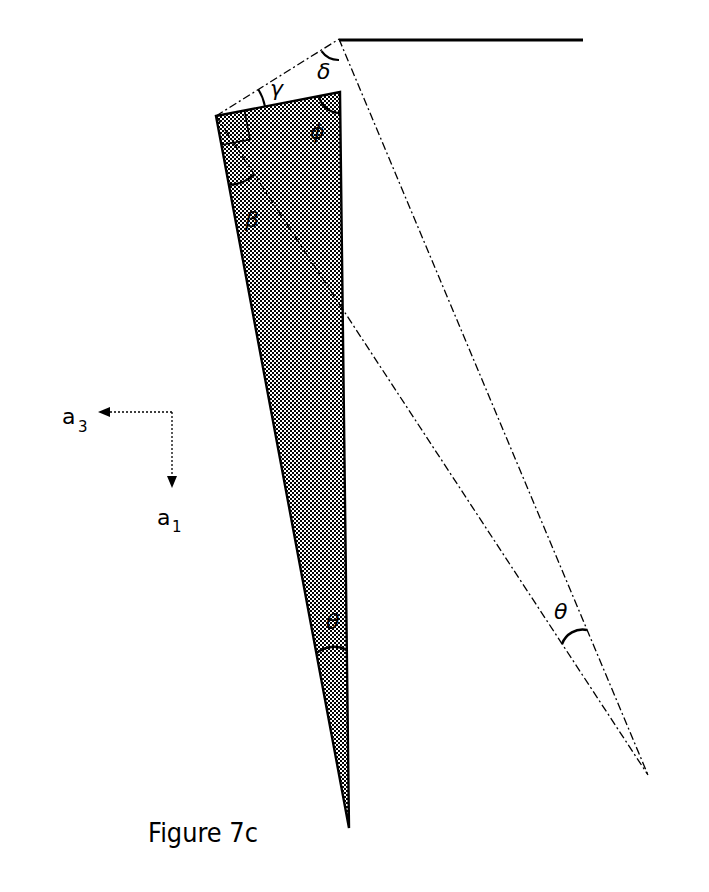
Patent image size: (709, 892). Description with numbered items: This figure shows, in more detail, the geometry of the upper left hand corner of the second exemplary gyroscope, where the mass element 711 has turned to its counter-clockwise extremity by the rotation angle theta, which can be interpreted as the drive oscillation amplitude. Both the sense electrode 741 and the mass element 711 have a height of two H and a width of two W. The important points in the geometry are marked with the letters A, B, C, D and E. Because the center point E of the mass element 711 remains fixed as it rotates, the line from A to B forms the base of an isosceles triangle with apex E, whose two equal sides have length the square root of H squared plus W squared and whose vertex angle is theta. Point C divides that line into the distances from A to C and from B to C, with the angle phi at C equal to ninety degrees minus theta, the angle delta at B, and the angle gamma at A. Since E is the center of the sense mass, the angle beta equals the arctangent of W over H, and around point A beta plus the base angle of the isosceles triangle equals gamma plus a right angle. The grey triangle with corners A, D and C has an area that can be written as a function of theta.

The mass element 711 is at (292, 362).
The sense electrode 741 is at (461, 85).
The point A is at (223, 137).
The point B is at (334, 33).
The point C is at (340, 99).
The point D is at (344, 743).
The center point E is at (613, 717).